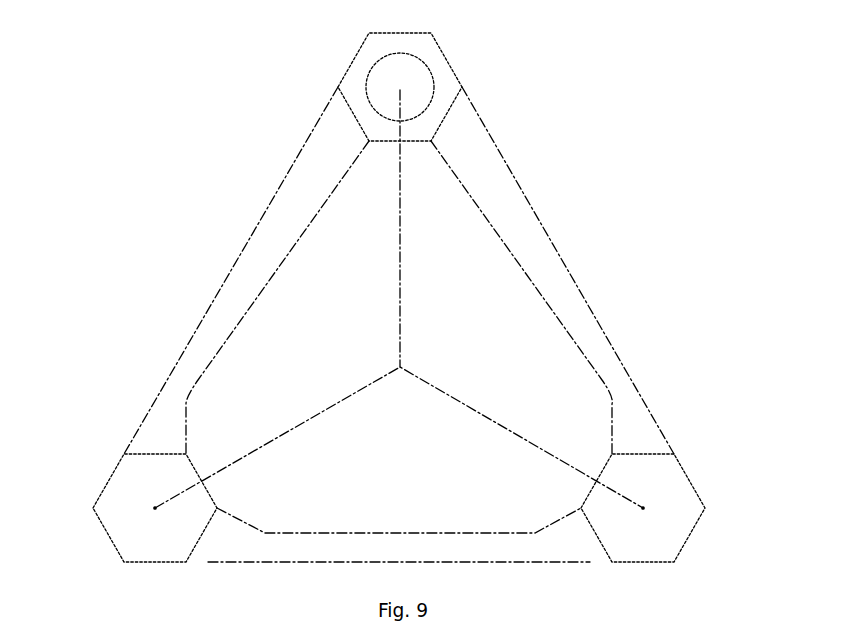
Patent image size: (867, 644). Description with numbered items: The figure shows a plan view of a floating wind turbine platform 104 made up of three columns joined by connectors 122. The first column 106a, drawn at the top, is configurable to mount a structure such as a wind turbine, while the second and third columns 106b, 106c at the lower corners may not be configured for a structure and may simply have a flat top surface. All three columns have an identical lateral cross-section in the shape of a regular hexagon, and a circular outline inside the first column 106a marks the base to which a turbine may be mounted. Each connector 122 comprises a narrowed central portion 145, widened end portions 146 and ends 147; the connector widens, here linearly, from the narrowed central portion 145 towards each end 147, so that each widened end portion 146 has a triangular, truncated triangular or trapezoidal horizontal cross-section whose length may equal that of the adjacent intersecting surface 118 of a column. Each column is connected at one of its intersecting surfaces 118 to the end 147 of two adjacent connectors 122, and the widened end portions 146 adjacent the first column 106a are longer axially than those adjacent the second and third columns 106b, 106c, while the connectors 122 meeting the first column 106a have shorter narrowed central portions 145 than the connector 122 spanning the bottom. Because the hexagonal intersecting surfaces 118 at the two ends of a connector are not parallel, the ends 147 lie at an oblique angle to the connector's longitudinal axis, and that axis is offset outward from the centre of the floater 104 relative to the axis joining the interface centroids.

The floating wind turbine platform 104 is at (198, 157).
The first column 106a is at (366, 63).
The second column 106b is at (138, 533).
The third column 106c is at (673, 523).
The intersecting surface 118 is at (450, 104).
The connector 122 is at (580, 244).
The narrowed central portion 145 is at (238, 258).
The widened end portion 146 is at (332, 140).
The end 147 is at (653, 447).